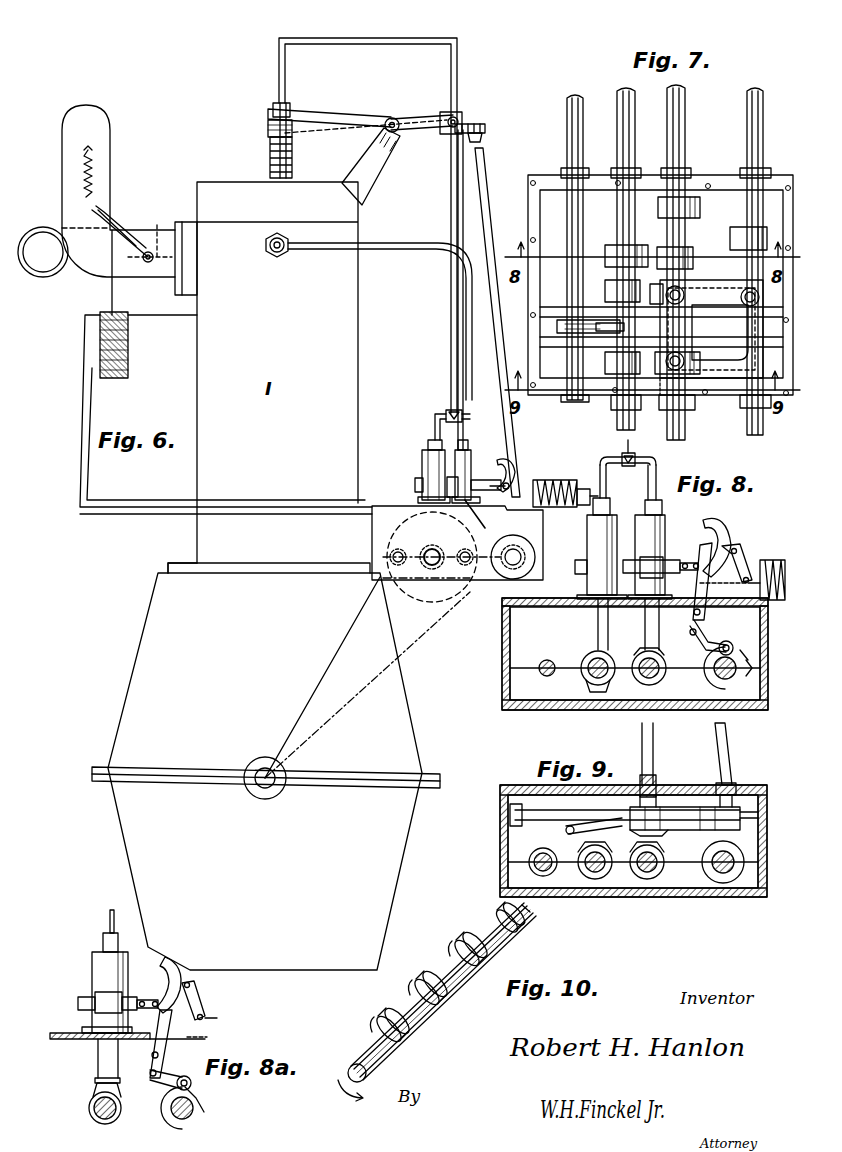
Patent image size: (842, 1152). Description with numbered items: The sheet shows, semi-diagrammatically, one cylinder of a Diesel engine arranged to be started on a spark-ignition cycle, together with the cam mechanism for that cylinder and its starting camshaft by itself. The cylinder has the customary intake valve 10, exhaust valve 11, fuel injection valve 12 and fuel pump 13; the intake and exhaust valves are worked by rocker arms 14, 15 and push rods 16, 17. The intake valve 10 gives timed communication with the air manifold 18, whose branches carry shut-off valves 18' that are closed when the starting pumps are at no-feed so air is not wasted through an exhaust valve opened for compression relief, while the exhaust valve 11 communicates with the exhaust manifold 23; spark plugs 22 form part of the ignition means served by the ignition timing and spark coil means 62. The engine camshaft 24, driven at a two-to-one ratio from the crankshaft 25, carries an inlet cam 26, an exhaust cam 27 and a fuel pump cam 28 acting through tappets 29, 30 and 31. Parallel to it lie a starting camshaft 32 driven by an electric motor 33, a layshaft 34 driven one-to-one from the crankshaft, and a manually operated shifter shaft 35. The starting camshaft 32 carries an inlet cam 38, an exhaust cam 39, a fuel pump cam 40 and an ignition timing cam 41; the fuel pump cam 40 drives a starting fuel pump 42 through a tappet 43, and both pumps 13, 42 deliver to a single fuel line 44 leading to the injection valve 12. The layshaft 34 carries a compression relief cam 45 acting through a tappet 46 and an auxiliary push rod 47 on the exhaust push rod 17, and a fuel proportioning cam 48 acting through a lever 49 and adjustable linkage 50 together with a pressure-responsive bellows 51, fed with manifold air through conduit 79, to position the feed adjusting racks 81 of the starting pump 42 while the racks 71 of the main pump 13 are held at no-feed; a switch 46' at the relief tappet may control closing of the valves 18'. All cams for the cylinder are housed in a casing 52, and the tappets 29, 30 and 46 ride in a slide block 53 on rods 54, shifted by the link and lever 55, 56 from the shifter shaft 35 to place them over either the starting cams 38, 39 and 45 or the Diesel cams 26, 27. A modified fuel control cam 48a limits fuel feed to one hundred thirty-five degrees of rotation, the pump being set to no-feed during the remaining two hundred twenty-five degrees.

In FIG. 6, the intake valve 10 is at (270, 156).
In FIG. 6, the exhaust valve 11 is at (268, 132).
In FIG. 6, the fuel injection valve 12 is at (291, 151).
In FIG. 6, the fuel pump 13 is at (422, 469).
In FIG. 8, the fuel pump 13 is at (587, 542).
In FIG. 6, the rocker arm 14 is at (345, 140).
In FIG. 6, the rocker arm 15 is at (338, 118).
In FIG. 6, the push rod 16 is at (458, 220).
In FIG. 9, the push rod 16 is at (653, 740).
In FIG. 6, the push rod 17 is at (466, 124).
In FIG. 6, the air manifold 18 is at (118, 210).
In FIG. 6, the shut-off valve 18' is at (150, 232).
In FIG. 6, the spark plug 22 is at (277, 257).
In FIG. 6, the exhaust manifold 23 is at (41, 277).
In FIG. 6, the engine camshaft 24 is at (437, 545).
In FIG. 7, the engine camshaft 24 is at (617, 133).
In FIG. 8, the engine camshaft 24 is at (605, 676).
In FIG. 9, the engine camshaft 24 is at (598, 876).
In FIG. 6, the engine crankshaft 25 is at (258, 784).
In FIG. 7, the inlet cam 26 is at (607, 375).
In FIG. 9, the inlet cam 26 is at (548, 876).
In FIG. 7, the exhaust cam 27 is at (605, 290).
In FIG. 7, the fuel pump cam 28 is at (612, 248).
In FIG. 8, the fuel pump cam 28 is at (590, 684).
In FIG. 7, the tappet 29 is at (680, 370).
In FIG. 9, the tappet 29 is at (640, 795).
In FIG. 7, the tappet 30 is at (682, 290).
In FIG. 6, the tappet 31 is at (485, 525).
In FIG. 8, the tappet 31 is at (598, 630).
In FIG. 6, the starting camshaft 32 is at (463, 585).
In FIG. 7, the starting camshaft 32 is at (667, 130).
In FIG. 8, the starting camshaft 32 is at (656, 676).
In FIG. 9, the starting camshaft 32 is at (648, 880).
In FIG. 8A, the starting camshaft 32 is at (100, 1110).
In FIG. 10, the starting camshaft 32 is at (378, 1052).
In FIG. 7, the electric motor 33 is at (656, 284).
In FIG. 6, the layshaft 34 is at (515, 563).
In FIG. 7, the layshaft 34 is at (747, 136).
In FIG. 8, the layshaft 34 is at (722, 678).
In FIG. 9, the layshaft 34 is at (730, 882).
In FIG. 8A, the layshaft 34 is at (192, 1107).
In FIG. 6, the shifter shaft 35 is at (385, 578).
In FIG. 7, the shifter shaft 35 is at (567, 138).
In FIG. 8, the shifter shaft 35 is at (549, 662).
In FIG. 9, the shifter shaft 35 is at (534, 862).
In FIG. 7, the inlet cam 38 is at (660, 380).
In FIG. 9, the inlet cam 38 is at (662, 866).
In FIG. 10, the inlet cam 38 is at (378, 1025).
In FIG. 10, the exhaust cam 39 is at (416, 990).
In FIG. 7, the fuel pump cam 40 is at (663, 250).
In FIG. 8, the fuel pump cam 40 is at (640, 655).
In FIG. 8A, the fuel pump cam 40 is at (92, 1096).
In FIG. 10, the fuel pump cam 40 is at (462, 948).
In FIG. 7, the ignition timing cam 41 is at (700, 208).
In FIG. 10, the ignition timing cam 41 is at (524, 922).
In FIG. 6, the starting fuel pump 42 is at (473, 468).
In FIG. 8, the starting fuel pump 42 is at (662, 543).
In FIG. 8A, the starting fuel pump 42 is at (92, 973).
In FIG. 8, the tappet 43 is at (645, 632).
In FIG. 8A, the tappet 43 is at (98, 1066).
In FIG. 6, the fuel line 44 is at (373, 32).
In FIG. 7, the compression relief cam 45 is at (745, 310).
In FIG. 9, the compression relief cam 45 is at (716, 884).
In FIG. 7, the tappet 46 is at (731, 301).
In FIG. 9, the tappet 46 is at (742, 782).
In FIG. 6, the nut 46' is at (582, 485).
In FIG. 6, the auxiliary push rod 47 is at (485, 204).
In FIG. 9, the auxiliary push rod 47 is at (720, 755).
In FIG. 7, the fuel proportioning cam 48 is at (730, 238).
In FIG. 8, the fuel proportioning cam 48 is at (706, 664).
In FIG. 8A, the collar 48a is at (165, 1104).
In FIG. 8, the lever 49 is at (706, 643).
In FIG. 8A, the lever 49 is at (163, 1074).
In FIG. 6, the adjustable linkage 50 is at (513, 462).
In FIG. 8, the adjustable linkage 50 is at (702, 588).
In FIG. 8A, the adjustable linkage 50 is at (160, 1027).
In FIG. 6, the pressure responsive member 51 is at (548, 480).
In FIG. 8, the pressure responsive member 51 is at (770, 560).
In FIG. 7, the casing 52 is at (528, 294).
In FIG. 8, the casing 52 is at (502, 650).
In FIG. 9, the casing 52 is at (500, 830).
In FIG. 7, the slide block 53 is at (735, 380).
In FIG. 9, the slide block 53 is at (682, 830).
In FIG. 7, the rods 54 is at (560, 312).
In FIG. 9, the rods 54 is at (510, 800).
In FIG. 7, the link 55 is at (585, 336).
In FIG. 9, the link 55 is at (560, 830).
In FIG. 7, the lever 56 is at (612, 336).
In FIG. 9, the lever 56 is at (604, 832).
In FIG. 6, the ignition timing and spark coil means 62 is at (440, 470).
In FIG. 6, the feed adjusting racks 71 is at (415, 487).
In FIG. 8, the feed adjusting racks 71 is at (575, 565).
In FIG. 8, the conduit 79 is at (593, 512).
In FIG. 6, the feed adjusting racks 81 is at (495, 482).
In FIG. 8, the feed adjusting racks 81 is at (690, 563).
In FIG. 8A, the feed adjusting racks 81 is at (140, 1000).